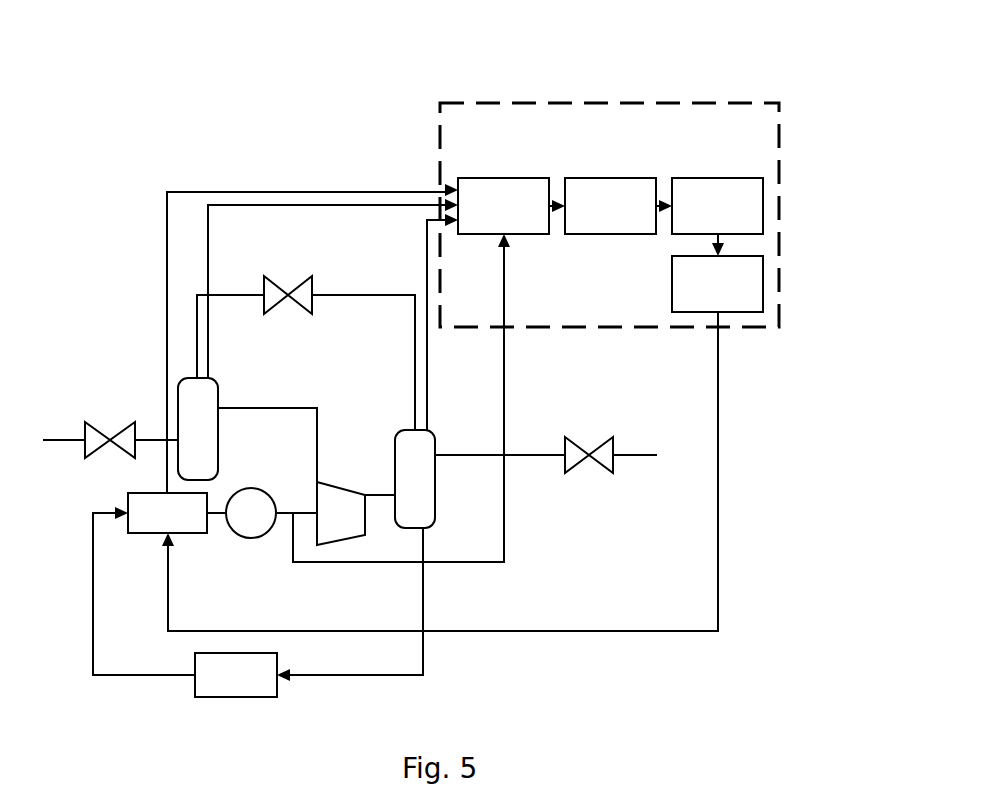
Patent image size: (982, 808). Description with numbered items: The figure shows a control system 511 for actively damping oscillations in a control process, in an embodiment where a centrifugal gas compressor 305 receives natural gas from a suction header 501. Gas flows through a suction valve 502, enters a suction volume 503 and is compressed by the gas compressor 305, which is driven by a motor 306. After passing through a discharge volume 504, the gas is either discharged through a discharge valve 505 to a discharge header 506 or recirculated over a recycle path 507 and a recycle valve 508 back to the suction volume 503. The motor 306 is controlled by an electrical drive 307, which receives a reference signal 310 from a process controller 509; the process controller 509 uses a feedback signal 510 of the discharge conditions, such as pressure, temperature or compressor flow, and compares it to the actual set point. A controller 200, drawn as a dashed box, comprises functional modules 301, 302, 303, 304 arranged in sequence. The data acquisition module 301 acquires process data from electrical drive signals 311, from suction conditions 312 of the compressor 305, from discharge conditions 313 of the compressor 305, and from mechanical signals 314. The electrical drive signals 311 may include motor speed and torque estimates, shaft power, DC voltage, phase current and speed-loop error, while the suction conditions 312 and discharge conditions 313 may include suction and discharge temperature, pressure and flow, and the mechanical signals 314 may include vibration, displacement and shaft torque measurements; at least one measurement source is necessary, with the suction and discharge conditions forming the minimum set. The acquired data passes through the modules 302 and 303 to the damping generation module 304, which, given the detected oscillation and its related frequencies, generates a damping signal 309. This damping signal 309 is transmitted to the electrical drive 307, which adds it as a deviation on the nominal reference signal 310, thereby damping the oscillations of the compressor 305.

The control system 511 is at (203, 93).
The controller 200 is at (779, 327).
The data acquisition module 301 is at (503, 178).
The functional module 302 is at (609, 178).
The functional module 303 is at (713, 178).
The damping generation module 304 is at (672, 290).
The electrical drive signals 311 is at (195, 190).
The suction conditions 312 is at (208, 218).
The discharge conditions 313 is at (427, 385).
The mechanical signals 314 is at (504, 385).
The damping signal 309 is at (718, 631).
The reference signal 310 is at (93, 585).
The suction header 501 is at (57, 440).
The suction valve 502 is at (97, 425).
The suction volume 503 is at (218, 455).
The discharge volume 504 is at (435, 495).
The discharge valve 505 is at (571, 470).
The discharge header 506 is at (636, 456).
The recycle path 507 is at (373, 295).
The recycle valve 508 is at (286, 278).
The gas compressor 305 is at (352, 540).
The motor 306 is at (258, 538).
The electrical drive 307 is at (195, 533).
The process controller 509 is at (277, 655).
The feedback signal 510 is at (423, 657).